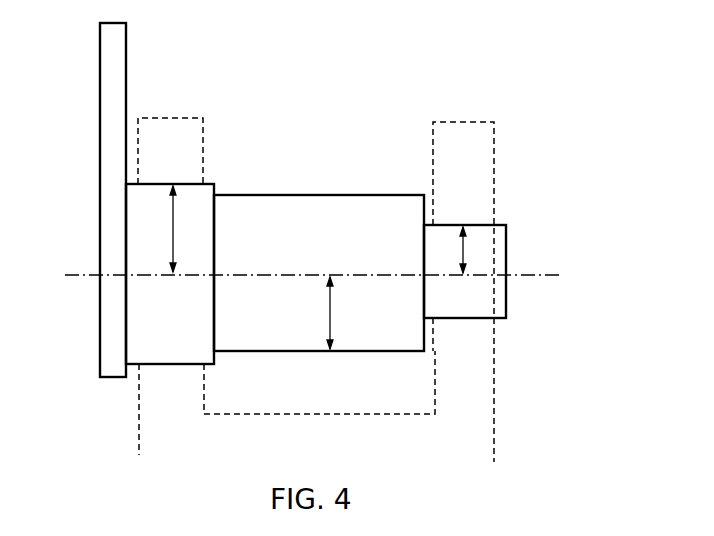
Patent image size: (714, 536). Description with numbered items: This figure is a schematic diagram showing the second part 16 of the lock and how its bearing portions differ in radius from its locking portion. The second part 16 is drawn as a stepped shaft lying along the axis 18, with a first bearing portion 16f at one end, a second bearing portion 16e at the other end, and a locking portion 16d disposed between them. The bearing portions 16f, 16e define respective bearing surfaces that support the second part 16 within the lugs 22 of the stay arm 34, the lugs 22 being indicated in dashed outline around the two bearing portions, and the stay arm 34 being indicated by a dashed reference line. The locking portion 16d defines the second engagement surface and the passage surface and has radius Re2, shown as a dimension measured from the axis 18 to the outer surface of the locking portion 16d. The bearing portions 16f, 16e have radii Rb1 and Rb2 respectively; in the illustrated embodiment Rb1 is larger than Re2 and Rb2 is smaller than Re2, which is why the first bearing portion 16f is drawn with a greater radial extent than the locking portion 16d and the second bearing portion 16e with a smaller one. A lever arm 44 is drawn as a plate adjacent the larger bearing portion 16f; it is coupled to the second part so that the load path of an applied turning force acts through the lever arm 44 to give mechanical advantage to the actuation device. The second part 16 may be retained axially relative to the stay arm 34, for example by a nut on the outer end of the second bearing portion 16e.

The second part 16 is at (285, 194).
The locking portion 16d is at (297, 353).
The second bearing portion 16e is at (507, 252).
The first bearing portion 16f is at (187, 364).
The axis 18 is at (545, 277).
The lugs 22 is at (203, 138).
The second stay arm 34 is at (138, 434).
The lever arm 44 is at (100, 60).
The radius of first bearing portion Rb1 is at (174, 228).
The radius of second bearing portion Rb2 is at (466, 250).
The radius of locking portion Re2 is at (333, 312).